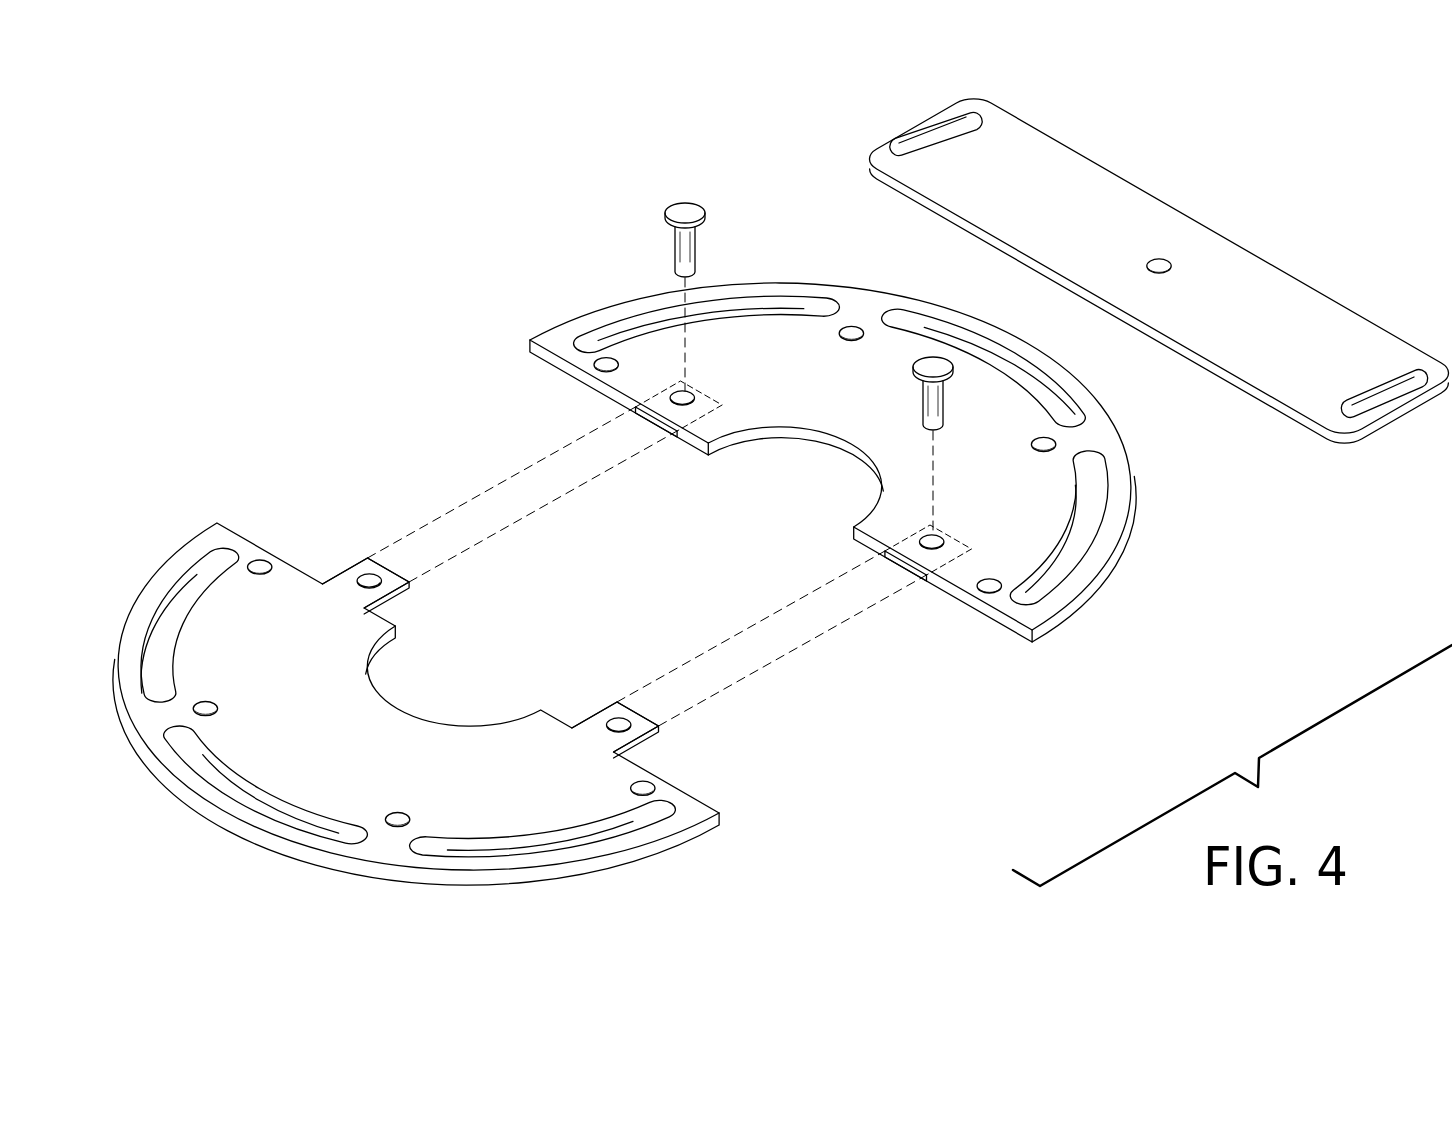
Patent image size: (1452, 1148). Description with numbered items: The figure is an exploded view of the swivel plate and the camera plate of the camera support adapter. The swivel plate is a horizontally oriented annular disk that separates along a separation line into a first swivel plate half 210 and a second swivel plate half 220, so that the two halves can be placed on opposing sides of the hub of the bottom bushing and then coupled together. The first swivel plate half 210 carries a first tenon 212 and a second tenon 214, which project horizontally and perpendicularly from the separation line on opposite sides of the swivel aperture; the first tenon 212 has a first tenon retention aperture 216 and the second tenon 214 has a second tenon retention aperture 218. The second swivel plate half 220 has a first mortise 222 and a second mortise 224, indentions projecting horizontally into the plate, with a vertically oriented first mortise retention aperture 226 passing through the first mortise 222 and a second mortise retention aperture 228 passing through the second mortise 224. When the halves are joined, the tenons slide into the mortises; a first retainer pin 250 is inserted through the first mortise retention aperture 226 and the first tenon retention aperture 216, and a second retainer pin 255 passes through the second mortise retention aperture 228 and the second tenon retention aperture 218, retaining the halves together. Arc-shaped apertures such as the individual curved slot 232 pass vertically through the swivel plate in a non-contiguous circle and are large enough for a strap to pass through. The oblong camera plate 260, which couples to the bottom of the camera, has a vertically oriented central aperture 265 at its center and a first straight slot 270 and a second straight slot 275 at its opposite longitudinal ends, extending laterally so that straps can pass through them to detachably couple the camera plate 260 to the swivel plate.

The first swivel plate half 210 is at (376, 880).
The first tenon 212 is at (348, 578).
The second tenon 214 is at (590, 720).
The first tenon retention aperture 216 is at (384, 576).
The second tenon retention aperture 218 is at (640, 719).
The second swivel plate half 220 is at (1011, 632).
The first mortise 222 is at (657, 422).
The second mortise 224 is at (908, 568).
The first mortise retention aperture 226 is at (700, 393).
The second mortise retention aperture 228 is at (944, 532).
The individual curved slot 232 is at (640, 832).
The first retainer pin 250 is at (701, 218).
The second retainer pin 255 is at (952, 372).
The camera plate 260 is at (1366, 440).
The central aperture 265 is at (1164, 258).
The first straight slot 270 is at (968, 110).
The second straight slot 275 is at (1418, 372).